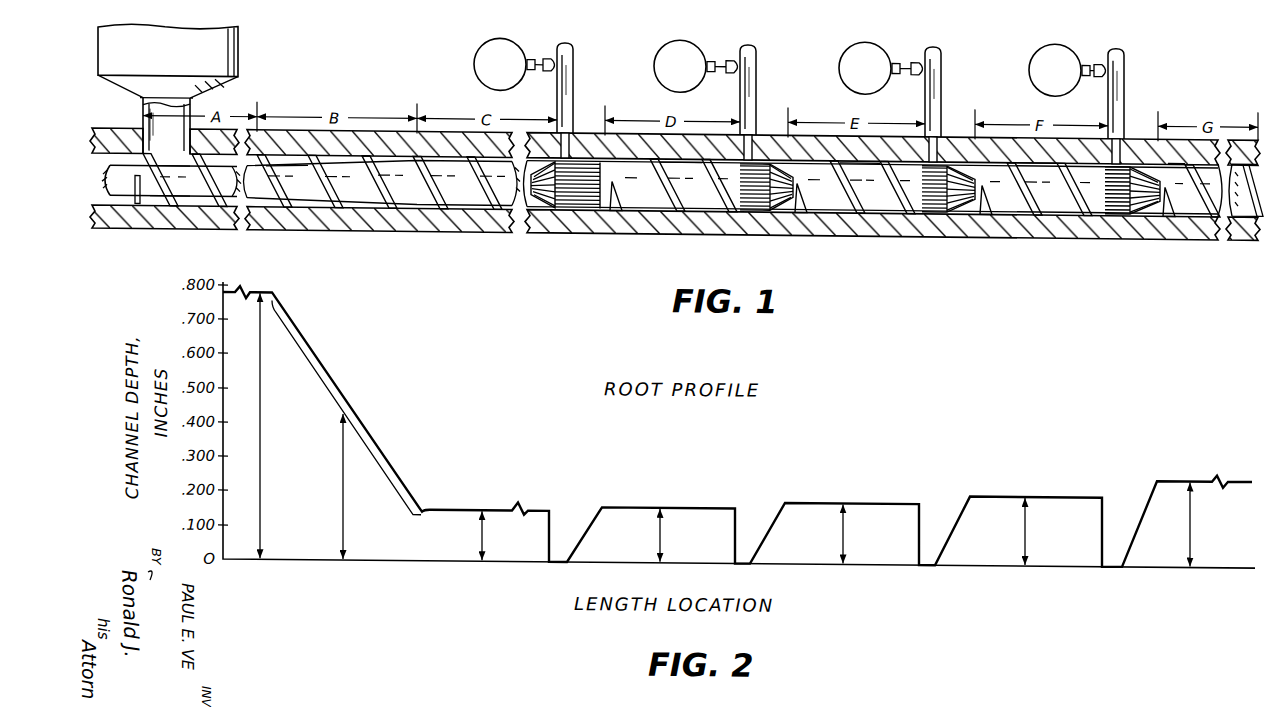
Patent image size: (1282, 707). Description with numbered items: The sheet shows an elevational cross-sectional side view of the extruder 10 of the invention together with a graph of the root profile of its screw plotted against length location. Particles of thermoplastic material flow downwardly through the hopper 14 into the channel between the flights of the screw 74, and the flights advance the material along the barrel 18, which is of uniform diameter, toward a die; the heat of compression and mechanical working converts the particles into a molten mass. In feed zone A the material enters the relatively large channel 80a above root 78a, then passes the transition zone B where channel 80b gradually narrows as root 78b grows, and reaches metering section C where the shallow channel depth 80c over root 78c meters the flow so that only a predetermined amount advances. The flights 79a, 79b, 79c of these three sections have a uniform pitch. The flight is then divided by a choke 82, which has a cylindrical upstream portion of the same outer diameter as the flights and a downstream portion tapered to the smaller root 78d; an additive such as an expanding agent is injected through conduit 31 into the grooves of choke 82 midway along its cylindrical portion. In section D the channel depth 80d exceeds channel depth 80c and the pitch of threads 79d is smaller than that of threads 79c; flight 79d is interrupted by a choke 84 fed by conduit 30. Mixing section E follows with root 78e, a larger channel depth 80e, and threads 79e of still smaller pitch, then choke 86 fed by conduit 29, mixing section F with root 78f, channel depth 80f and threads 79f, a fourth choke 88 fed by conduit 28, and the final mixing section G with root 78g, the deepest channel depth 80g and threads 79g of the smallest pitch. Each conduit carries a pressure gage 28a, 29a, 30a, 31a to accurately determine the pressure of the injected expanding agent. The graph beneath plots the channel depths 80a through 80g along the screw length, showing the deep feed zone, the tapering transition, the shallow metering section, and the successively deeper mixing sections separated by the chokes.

In FIG. 1, the extruder 10 is at (612, 268).
In FIG. 1, the hopper 14 is at (128, 60).
In FIG. 1, the barrel 18 is at (393, 212).
In FIG. 1, the conduit 28 is at (1116, 102).
In FIG. 1, the pressure gage 28a is at (1030, 60).
In FIG. 1, the conduit 29 is at (933, 102).
In FIG. 1, the pressure gage 29a is at (839, 65).
In FIG. 1, the conduit 30 is at (748, 102).
In FIG. 1, the pressure gage 30a is at (654, 66).
In FIG. 1, the conduit 31 is at (565, 102).
In FIG. 1, the pressure gage 31a is at (474, 66).
In FIG. 1, the screw 74 is at (121, 178).
In FIG. 1, the root 78a is at (192, 190).
In FIG. 1, the root 78b is at (315, 195).
In FIG. 1, the root 78c is at (465, 200).
In FIG. 1, the root 78d is at (638, 198).
In FIG. 1, the root 78e is at (832, 203).
In FIG. 1, the root 78f is at (1003, 200).
In FIG. 1, the root 78g is at (1190, 195).
In FIG. 1, the flight 79a is at (190, 153).
In FIG. 1, the flight 79b is at (367, 153).
In FIG. 1, the flight 79c is at (472, 153).
In FIG. 1, the flight 79d is at (664, 153).
In FIG. 1, the flight 79e is at (820, 153).
In FIG. 1, the flight 79f is at (1003, 153).
In FIG. 1, the flight 79g is at (1186, 153).
In FIG. 1, the channel 80a is at (177, 197).
In FIG. 2, the channel 80a is at (259, 425).
In FIG. 1, the channel 80b is at (295, 203).
In FIG. 2, the channel 80b is at (344, 486).
In FIG. 1, the channel depth 80c is at (485, 205).
In FIG. 2, the channel depth 80c is at (483, 535).
In FIG. 1, the channel depth 80d is at (702, 207).
In FIG. 2, the channel depth 80d is at (660, 535).
In FIG. 1, the channel depth 80e is at (882, 210).
In FIG. 2, the channel depth 80e is at (843, 533).
In FIG. 1, the channel depth 80f is at (1053, 210).
In FIG. 2, the channel depth 80f is at (1025, 531).
In FIG. 1, the channel depth 80g is at (1164, 185).
In FIG. 2, the channel depth 80g is at (1190, 524).
In FIG. 1, the choke 82 is at (603, 212).
In FIG. 1, the choke 84 is at (782, 212).
In FIG. 1, the choke 86 is at (972, 205).
In FIG. 1, the choke 88 is at (1140, 205).